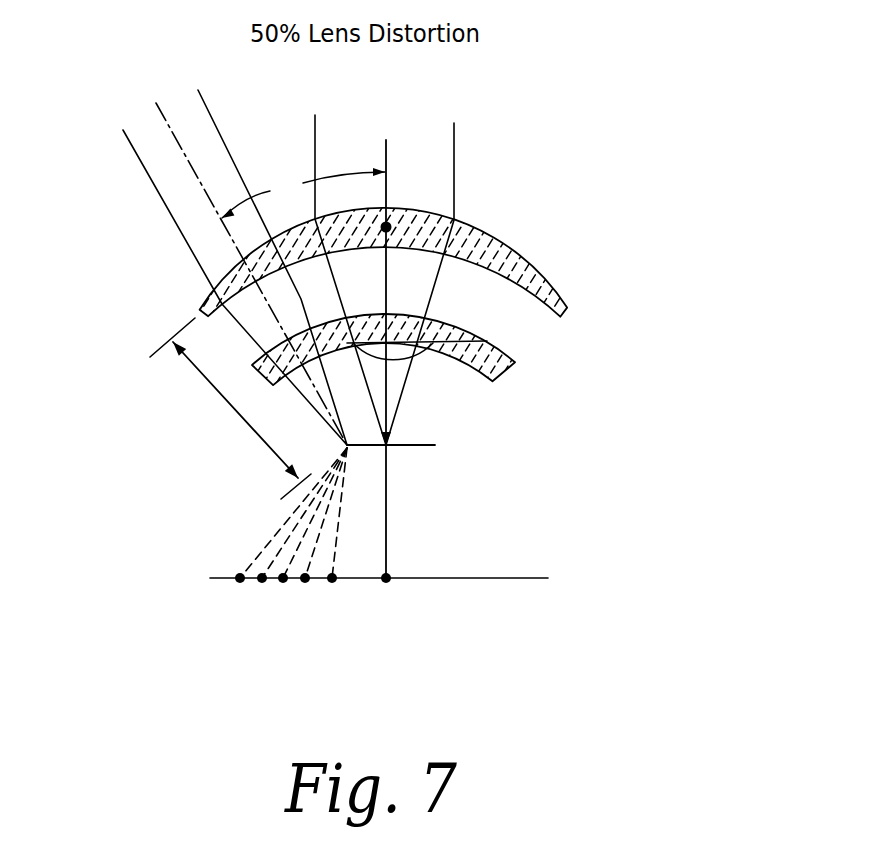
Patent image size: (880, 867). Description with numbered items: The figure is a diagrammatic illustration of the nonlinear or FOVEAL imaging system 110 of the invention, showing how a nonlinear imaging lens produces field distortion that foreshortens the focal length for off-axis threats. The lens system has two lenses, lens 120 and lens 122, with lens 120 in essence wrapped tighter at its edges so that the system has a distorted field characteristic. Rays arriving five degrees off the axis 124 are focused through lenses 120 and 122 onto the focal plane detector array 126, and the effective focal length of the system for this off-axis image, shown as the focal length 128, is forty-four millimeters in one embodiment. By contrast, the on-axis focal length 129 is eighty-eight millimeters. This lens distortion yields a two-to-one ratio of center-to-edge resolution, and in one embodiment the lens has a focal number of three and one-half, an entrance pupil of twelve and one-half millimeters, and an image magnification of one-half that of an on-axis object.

The nonlinear imaging system 110 is at (505, 172).
The lens 120 is at (491, 238).
The lens 122 is at (472, 365).
The axis 124 is at (386, 183).
The focal plane detector array 126 is at (413, 445).
The effective focal length for off-axis image 128 is at (227, 400).
The on-axis focal length 129 is at (487, 341).